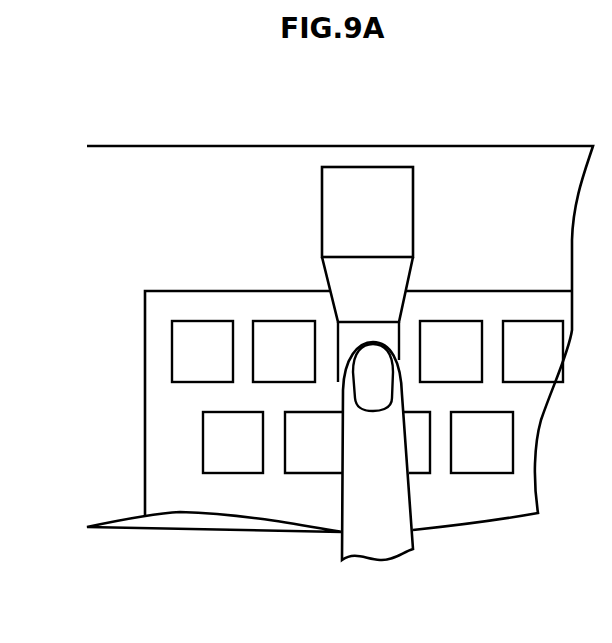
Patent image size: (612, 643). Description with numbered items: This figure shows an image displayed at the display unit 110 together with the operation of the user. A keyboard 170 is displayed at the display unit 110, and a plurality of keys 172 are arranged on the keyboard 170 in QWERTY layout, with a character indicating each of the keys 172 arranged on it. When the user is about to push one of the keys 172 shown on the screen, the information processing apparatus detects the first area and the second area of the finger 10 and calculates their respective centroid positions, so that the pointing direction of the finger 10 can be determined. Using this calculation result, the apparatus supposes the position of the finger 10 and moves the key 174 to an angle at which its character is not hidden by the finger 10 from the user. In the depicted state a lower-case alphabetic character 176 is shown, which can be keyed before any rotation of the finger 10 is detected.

The display screen 110 is at (492, 146).
The software keyboard area 170 is at (497, 291).
The keys 172 is at (172, 348).
The pop-up display 174 is at (322, 184).
The enlarged character 176 is at (343, 224).
The finger 10 is at (345, 482).